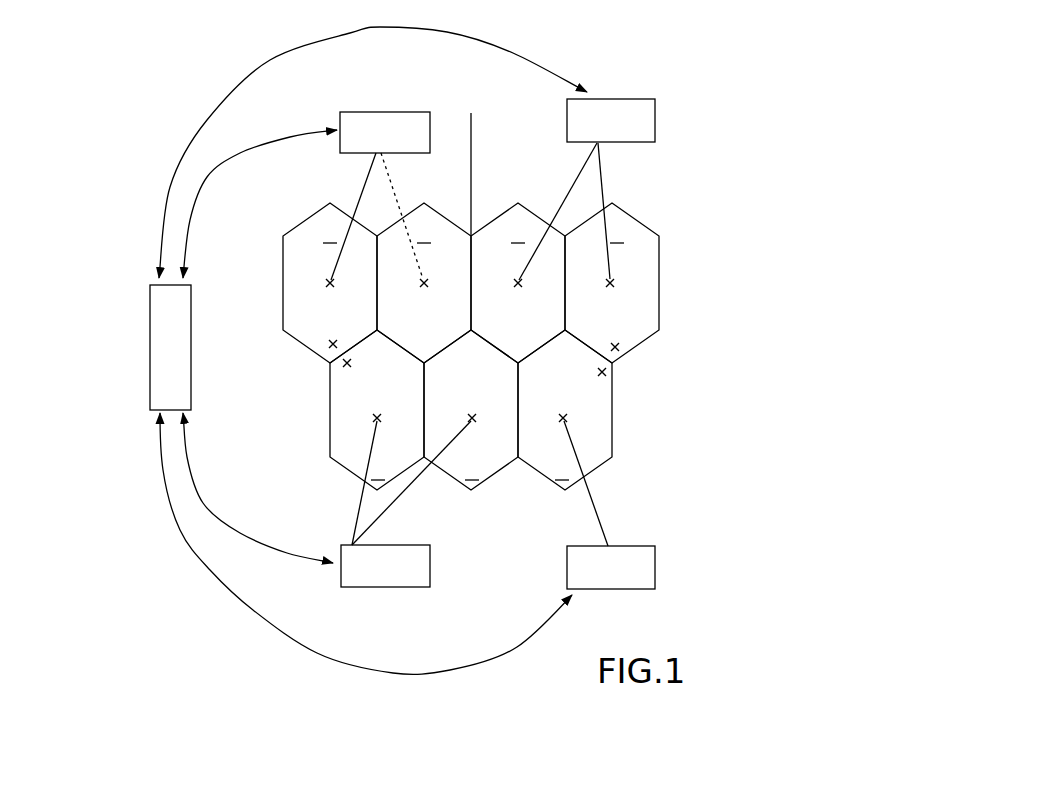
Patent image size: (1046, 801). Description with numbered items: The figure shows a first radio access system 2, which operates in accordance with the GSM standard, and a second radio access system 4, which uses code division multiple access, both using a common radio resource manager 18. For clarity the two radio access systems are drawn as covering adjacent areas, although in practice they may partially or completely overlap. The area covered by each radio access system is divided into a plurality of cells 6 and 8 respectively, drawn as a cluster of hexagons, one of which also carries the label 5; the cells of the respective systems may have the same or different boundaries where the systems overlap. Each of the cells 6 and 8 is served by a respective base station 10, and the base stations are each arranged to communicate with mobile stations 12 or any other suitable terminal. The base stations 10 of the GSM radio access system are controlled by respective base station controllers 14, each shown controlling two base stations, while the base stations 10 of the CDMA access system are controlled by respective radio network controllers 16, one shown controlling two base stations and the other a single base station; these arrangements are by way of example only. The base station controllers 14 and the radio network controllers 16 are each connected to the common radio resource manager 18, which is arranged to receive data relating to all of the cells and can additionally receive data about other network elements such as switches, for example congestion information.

The first radio access system 2 is at (476, 343).
The second radio access system 4 is at (642, 261).
The cell 5 is at (650, 213).
The cell 6 is at (400, 346).
The cell 8 is at (541, 346).
The base station 10 is at (437, 290).
The mobile station 12 is at (331, 345).
The base station controller 14 is at (413, 112).
The radio network controller 16 is at (656, 113).
The common radio resource manager 18 is at (150, 284).